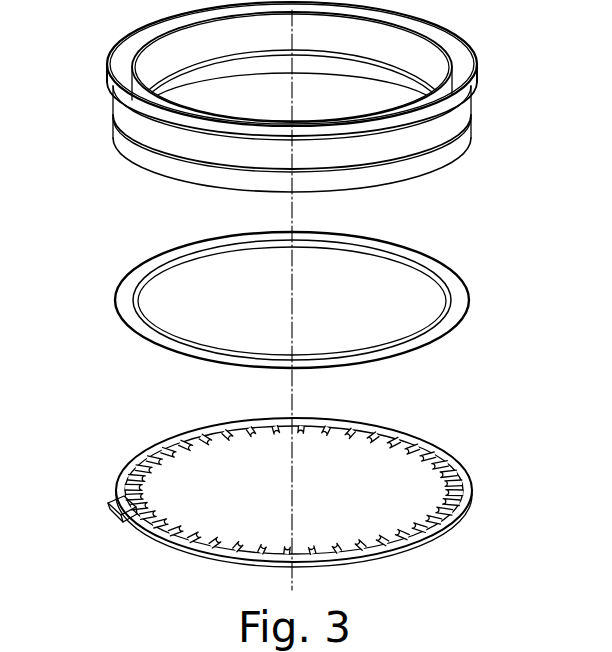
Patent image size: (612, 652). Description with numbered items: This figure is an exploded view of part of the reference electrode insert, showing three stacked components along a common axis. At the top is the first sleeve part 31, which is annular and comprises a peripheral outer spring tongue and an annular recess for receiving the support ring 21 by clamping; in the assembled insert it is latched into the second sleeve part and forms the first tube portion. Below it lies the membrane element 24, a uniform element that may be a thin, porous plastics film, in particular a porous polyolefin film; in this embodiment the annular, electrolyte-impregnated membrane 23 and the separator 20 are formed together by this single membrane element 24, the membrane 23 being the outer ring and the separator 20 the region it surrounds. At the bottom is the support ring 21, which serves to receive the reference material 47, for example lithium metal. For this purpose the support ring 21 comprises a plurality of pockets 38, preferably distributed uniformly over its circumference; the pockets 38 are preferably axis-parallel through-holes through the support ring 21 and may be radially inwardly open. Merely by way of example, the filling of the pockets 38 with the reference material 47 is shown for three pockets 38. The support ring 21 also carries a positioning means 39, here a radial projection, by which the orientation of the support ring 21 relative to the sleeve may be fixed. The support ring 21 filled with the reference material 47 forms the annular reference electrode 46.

The separator 20 is at (356, 317).
The support ring 21 is at (298, 490).
The annular, electrolyte-impregnated membrane 23 is at (453, 317).
The membrane element 24 is at (338, 300).
The first sleeve part 31 is at (492, 96).
The pockets 38 is at (287, 429).
The positioning means 39 is at (110, 509).
The annular reference electrode 46 is at (446, 543).
The reference material 47 is at (348, 424).